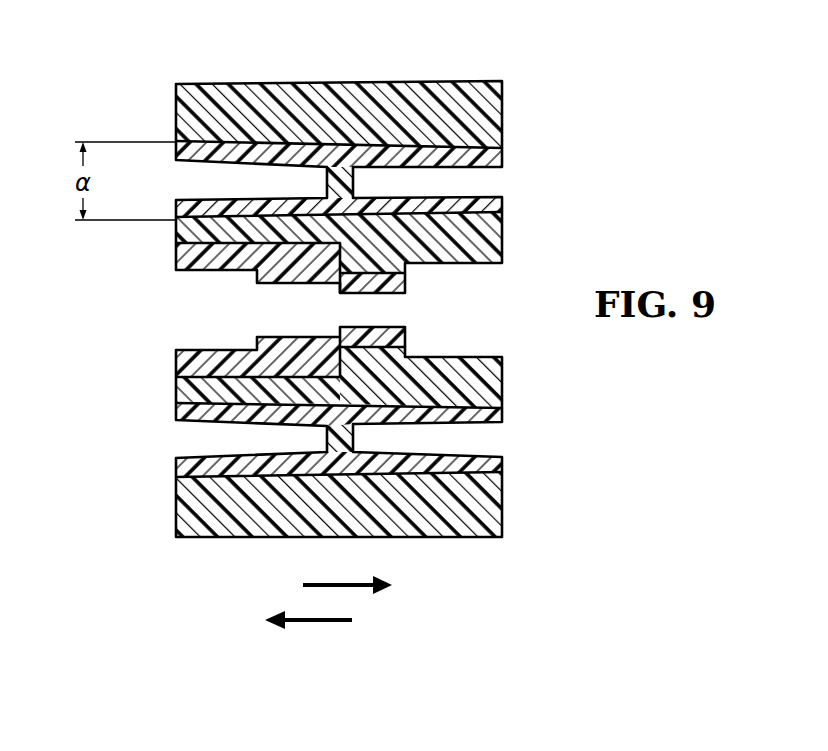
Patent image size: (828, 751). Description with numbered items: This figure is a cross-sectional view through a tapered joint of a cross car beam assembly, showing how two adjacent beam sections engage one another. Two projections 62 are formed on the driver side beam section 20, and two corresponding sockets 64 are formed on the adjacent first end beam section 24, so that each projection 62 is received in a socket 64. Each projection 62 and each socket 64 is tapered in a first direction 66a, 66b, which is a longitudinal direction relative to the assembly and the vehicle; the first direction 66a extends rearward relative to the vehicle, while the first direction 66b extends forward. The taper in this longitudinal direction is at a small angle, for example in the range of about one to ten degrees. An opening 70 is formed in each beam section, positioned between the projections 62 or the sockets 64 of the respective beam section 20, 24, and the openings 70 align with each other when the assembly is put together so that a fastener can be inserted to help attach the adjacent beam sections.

The first end beam section 24 is at (445, 83).
The projection 62 is at (458, 148).
The socket 64 is at (455, 200).
The driver side beam section 20 is at (185, 268).
The opening 70 is at (292, 337).
The first direction 66a is at (348, 587).
The first direction 66b is at (303, 623).